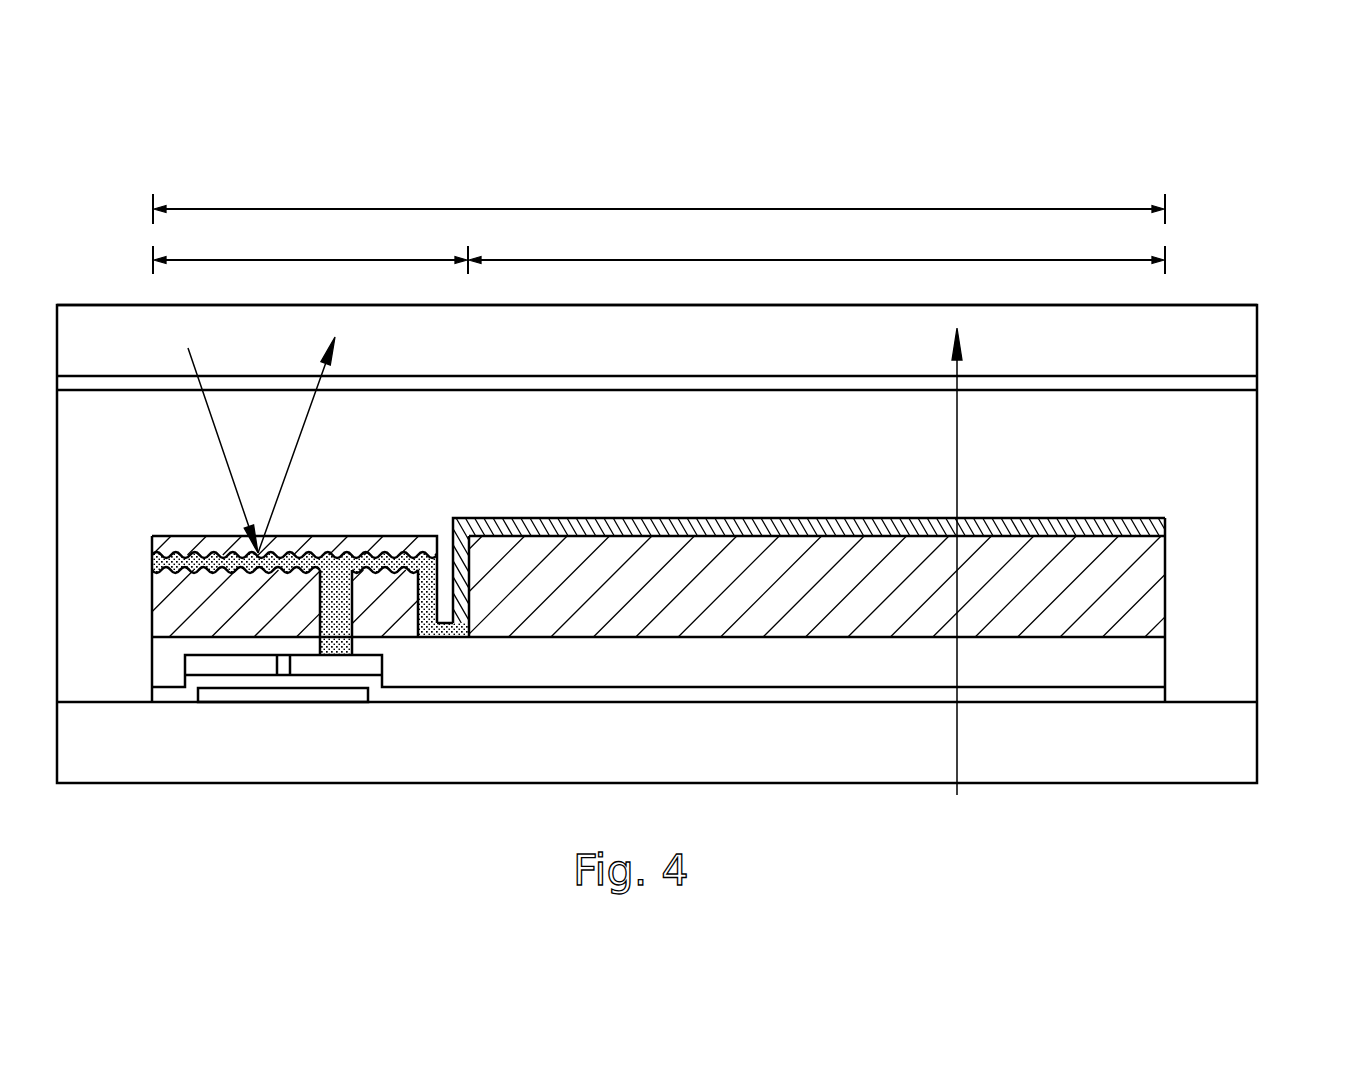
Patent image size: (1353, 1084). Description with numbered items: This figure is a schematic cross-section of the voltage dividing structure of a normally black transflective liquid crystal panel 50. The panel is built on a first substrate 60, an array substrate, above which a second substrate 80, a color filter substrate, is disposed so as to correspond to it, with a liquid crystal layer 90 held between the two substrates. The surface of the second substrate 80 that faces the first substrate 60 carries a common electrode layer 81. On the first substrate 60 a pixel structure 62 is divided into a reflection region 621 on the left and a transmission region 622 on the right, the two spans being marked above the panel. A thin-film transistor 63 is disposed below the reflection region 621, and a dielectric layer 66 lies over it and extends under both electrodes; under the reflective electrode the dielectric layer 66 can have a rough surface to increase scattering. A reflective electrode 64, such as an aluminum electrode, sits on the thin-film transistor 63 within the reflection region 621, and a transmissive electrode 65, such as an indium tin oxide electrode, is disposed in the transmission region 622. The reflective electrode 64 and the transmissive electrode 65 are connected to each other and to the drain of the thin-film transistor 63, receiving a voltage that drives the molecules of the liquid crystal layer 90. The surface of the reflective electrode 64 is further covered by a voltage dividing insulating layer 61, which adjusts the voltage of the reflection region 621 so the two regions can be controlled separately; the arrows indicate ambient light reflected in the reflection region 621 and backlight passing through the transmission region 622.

The transflective liquid crystal panel 50 is at (1225, 164).
The first substrate 60 is at (790, 757).
The voltage dividing insulating layer 61 is at (178, 543).
The pixel structure 62 is at (659, 198).
The reflection region 621 is at (310, 250).
The transmission region 622 is at (817, 249).
The thin-film transistor 63 is at (279, 733).
The reflective electrode 64 is at (155, 557).
The transmissive electrode 65 is at (1130, 518).
The dielectric layer 66 is at (250, 618).
The second substrate 80 is at (668, 358).
The common electrode layer 81 is at (1252, 383).
The liquid crystal layer 90 is at (1259, 511).